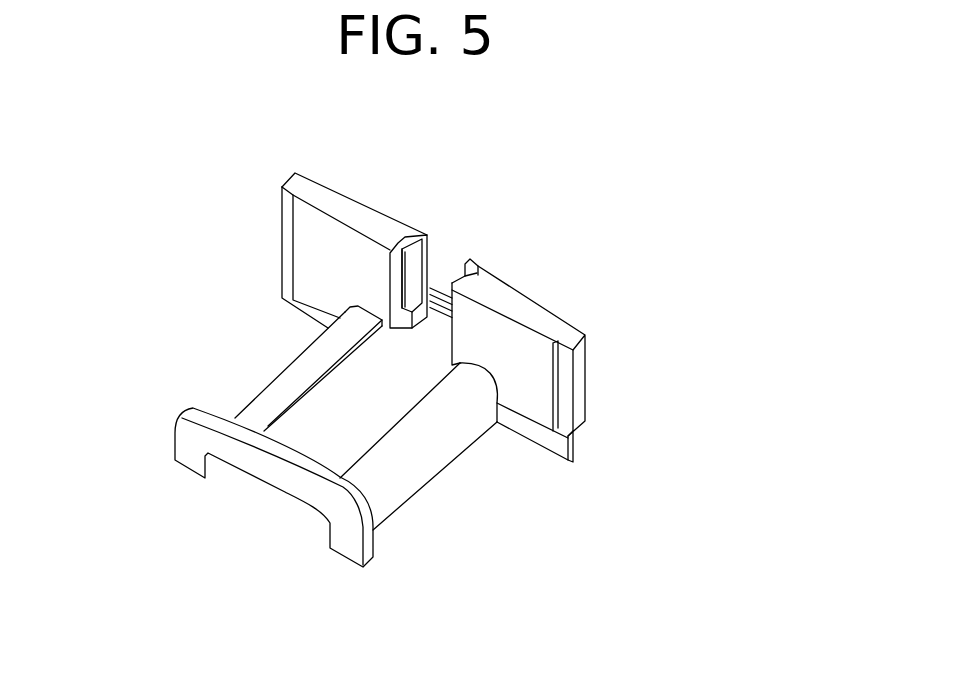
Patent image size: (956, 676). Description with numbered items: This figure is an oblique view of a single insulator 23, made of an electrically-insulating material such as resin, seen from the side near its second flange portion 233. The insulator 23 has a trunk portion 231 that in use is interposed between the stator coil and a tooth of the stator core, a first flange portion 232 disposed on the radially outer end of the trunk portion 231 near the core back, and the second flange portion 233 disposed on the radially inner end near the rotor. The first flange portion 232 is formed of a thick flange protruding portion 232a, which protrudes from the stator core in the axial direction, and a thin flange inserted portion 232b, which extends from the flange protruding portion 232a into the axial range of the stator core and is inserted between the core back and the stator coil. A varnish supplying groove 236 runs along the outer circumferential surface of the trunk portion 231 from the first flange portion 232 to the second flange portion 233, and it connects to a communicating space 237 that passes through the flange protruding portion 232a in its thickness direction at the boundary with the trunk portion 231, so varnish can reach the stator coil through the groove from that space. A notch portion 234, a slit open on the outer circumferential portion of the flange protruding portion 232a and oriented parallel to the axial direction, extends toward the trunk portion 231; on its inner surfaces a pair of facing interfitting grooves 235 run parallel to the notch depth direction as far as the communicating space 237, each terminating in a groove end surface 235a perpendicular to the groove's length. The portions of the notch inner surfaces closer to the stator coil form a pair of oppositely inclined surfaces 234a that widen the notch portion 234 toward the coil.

The insulator 23 is at (296, 170).
The trunk portion 231 is at (427, 470).
The first flange portion 232 is at (565, 317).
The flange protruding portion 232a is at (579, 380).
The flange inserted portion 232b is at (575, 450).
The second flange portion 233 is at (192, 436).
The notch portion 234 is at (443, 272).
The inclined surfaces 234a is at (393, 270).
The interfitting grooves 235 is at (421, 232).
The groove end surface 235a is at (394, 289).
The varnish supplying groove 236 is at (323, 400).
The communicating space 237 is at (437, 328).